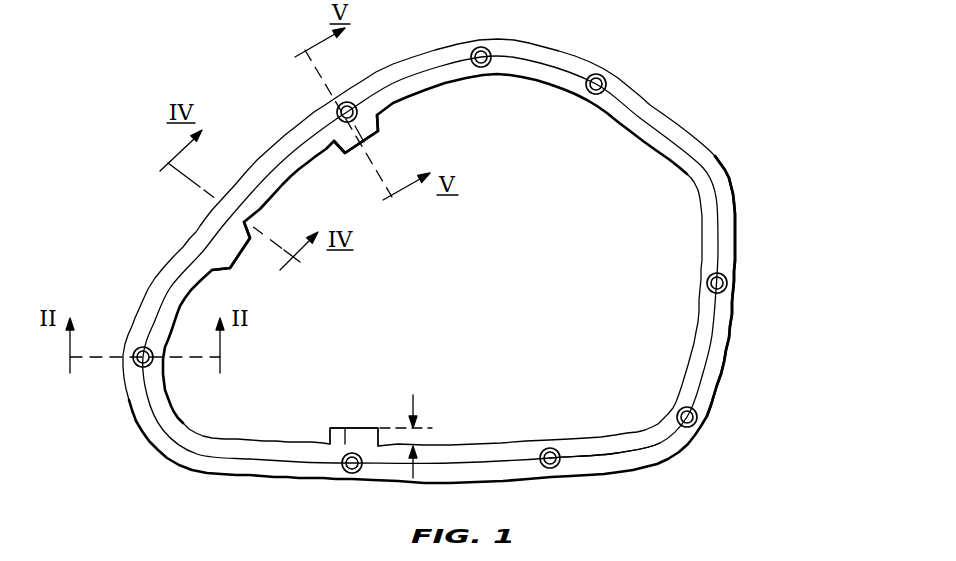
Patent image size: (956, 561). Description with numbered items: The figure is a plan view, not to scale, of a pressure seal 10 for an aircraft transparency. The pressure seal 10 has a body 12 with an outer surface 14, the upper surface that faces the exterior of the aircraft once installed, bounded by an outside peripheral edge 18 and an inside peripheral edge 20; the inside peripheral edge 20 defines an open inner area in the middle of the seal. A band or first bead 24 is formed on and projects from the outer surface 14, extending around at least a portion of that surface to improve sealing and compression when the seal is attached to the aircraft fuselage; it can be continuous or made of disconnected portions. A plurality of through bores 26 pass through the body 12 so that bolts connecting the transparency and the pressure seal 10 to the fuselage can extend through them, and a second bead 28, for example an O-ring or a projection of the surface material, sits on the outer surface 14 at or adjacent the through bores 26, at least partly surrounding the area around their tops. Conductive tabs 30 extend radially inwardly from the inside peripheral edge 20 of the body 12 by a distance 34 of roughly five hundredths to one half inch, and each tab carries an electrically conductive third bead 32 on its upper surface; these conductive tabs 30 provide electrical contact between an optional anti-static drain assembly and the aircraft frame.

The pressure seal 10 is at (472, 274).
The body 12 is at (735, 177).
The outer surface 14 is at (729, 219).
The outside peripheral edge 18 is at (745, 339).
The inside peripheral edge 20 is at (676, 353).
The first bead 24 is at (620, 456).
The through bores 26 is at (698, 420).
The second bead 28 is at (344, 471).
The conductive tabs 30 is at (360, 410).
The third bead 32 is at (346, 428).
The distance 34 is at (422, 434).